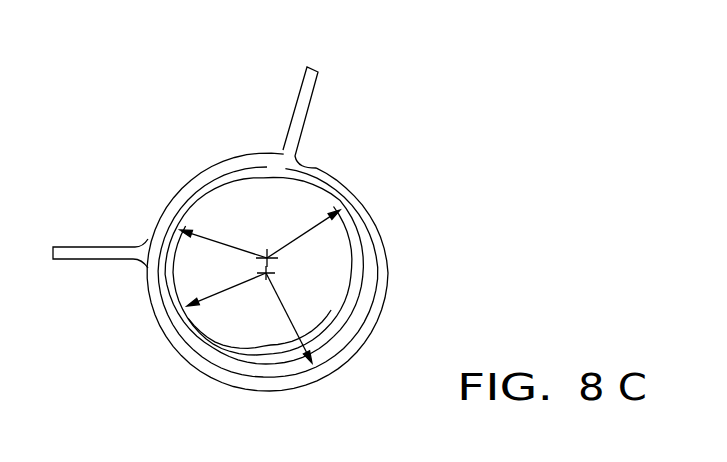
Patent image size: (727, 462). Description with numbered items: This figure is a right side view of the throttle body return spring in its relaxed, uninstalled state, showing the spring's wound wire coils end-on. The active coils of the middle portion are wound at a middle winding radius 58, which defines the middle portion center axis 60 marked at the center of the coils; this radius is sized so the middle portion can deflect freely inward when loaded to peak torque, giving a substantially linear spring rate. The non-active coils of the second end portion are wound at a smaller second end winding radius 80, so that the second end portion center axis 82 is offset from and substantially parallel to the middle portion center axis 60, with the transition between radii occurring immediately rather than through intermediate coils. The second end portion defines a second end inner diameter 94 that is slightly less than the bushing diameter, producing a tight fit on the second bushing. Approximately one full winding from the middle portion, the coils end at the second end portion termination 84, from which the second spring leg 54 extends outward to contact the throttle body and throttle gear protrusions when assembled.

The second spring leg 54 is at (307, 82).
The middle winding radius 58 is at (293, 323).
The middle portion center axis 60 is at (266, 273).
The second end winding radius 80 is at (217, 238).
The second end portion center axis 82 is at (272, 264).
The second end portion termination 84 is at (293, 153).
The second end inner diameter 94 is at (307, 232).